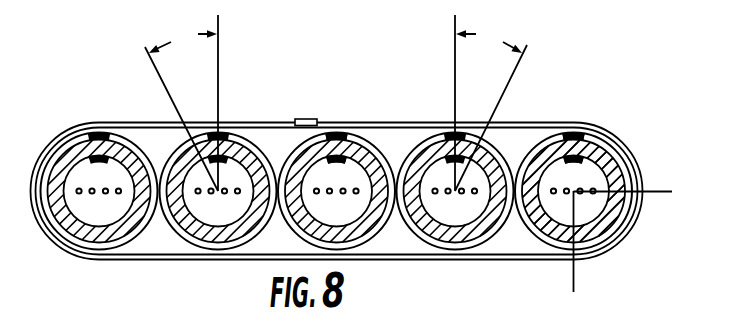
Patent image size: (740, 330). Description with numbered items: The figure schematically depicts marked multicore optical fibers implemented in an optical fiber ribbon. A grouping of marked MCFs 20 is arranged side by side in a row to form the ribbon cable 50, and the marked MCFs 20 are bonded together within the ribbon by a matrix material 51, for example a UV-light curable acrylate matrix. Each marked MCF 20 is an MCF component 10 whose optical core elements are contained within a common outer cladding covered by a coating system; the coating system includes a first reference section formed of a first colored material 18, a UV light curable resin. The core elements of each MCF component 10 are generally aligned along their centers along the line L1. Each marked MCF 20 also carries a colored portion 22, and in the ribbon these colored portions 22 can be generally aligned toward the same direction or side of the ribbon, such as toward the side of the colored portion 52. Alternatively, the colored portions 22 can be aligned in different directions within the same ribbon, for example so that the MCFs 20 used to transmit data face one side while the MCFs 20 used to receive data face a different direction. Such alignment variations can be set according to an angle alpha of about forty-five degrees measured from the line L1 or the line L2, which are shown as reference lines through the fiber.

The MCF component 10 is at (600, 179).
The first colored material 18 is at (588, 147).
The marked MCF 20 is at (266, 127).
The colored portion 22 is at (346, 127).
The ribbon cable 50 is at (365, 156).
The matrix material 51 is at (154, 127).
The colored portion 52 is at (308, 118).
The line L1 is at (648, 192).
The line L2 is at (575, 278).